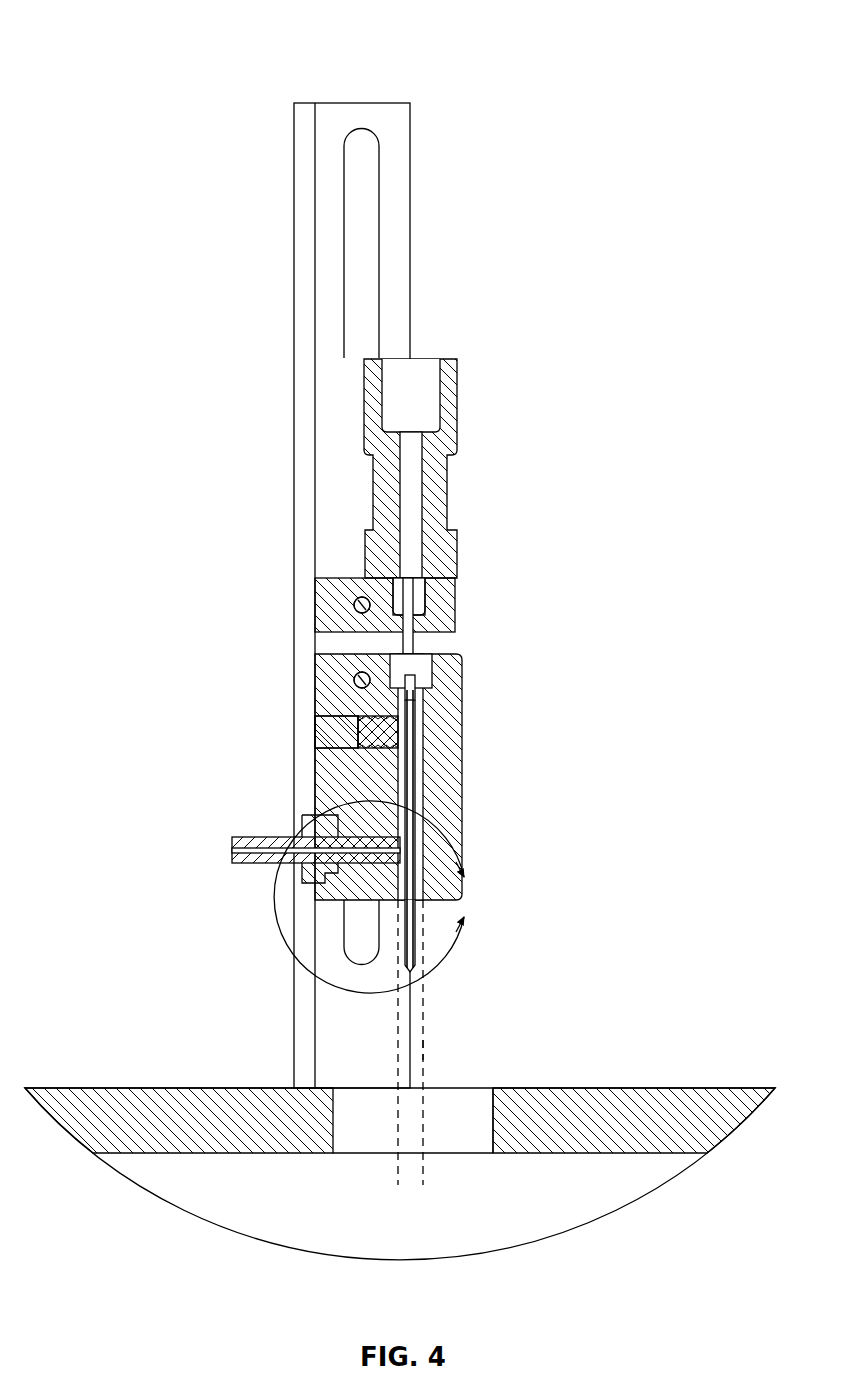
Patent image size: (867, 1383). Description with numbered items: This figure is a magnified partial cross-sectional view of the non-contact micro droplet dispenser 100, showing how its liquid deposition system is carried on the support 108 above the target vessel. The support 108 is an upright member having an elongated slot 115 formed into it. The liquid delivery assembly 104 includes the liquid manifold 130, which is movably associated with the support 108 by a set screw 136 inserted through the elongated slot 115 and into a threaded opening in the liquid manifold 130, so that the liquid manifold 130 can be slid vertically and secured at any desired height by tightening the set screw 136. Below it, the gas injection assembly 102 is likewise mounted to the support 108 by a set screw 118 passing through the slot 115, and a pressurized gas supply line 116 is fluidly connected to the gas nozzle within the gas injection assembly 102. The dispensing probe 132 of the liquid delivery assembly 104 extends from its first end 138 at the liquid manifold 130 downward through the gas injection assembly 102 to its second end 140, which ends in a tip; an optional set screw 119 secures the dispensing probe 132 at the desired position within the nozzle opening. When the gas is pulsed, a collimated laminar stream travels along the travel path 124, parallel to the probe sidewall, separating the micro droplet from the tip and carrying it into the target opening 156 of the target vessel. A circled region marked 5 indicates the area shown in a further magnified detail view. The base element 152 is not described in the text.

The non-contact micro droplet dispenser 100 is at (196, 30).
The support 108 is at (294, 205).
The elongated slot 115 is at (345, 236).
The liquid manifold 130 is at (457, 540).
The set screw 136 is at (355, 598).
The first end 138 is at (428, 590).
The liquid delivery assembly 104 is at (457, 602).
The set screw 118 is at (362, 678).
The set screw 119 is at (328, 702).
The gas injection assembly 102 is at (462, 780).
The pressurized gas supply line 116 is at (240, 865).
The detail view circle 5 is at (375, 897).
The second end 140 is at (415, 948).
The dispensing probe 132 is at (415, 958).
The travel path 124 is at (425, 1046).
The base 152 is at (90, 1105).
The target opening 156 is at (493, 1105).